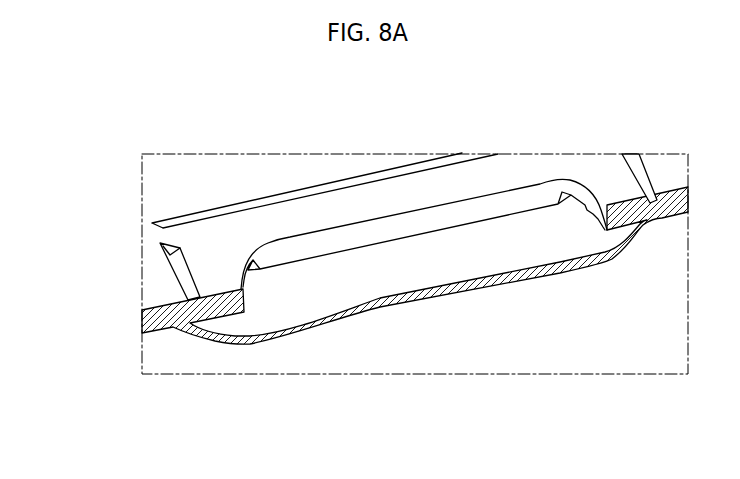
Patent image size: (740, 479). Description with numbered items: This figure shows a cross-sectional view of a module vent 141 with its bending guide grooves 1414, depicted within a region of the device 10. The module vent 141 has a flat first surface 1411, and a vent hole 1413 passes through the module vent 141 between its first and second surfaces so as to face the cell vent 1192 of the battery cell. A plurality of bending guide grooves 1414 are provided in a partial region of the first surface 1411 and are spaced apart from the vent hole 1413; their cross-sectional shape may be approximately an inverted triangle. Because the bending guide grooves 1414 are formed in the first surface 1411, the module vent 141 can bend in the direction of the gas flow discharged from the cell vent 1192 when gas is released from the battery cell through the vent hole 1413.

The electronic device 10 is at (594, 357).
The module vent 141 is at (293, 207).
The first surface 1411 is at (220, 237).
The vent hole 1413 is at (413, 220).
The bending guide grooves 1414 is at (168, 260).
The cell vent 1192 is at (514, 255).